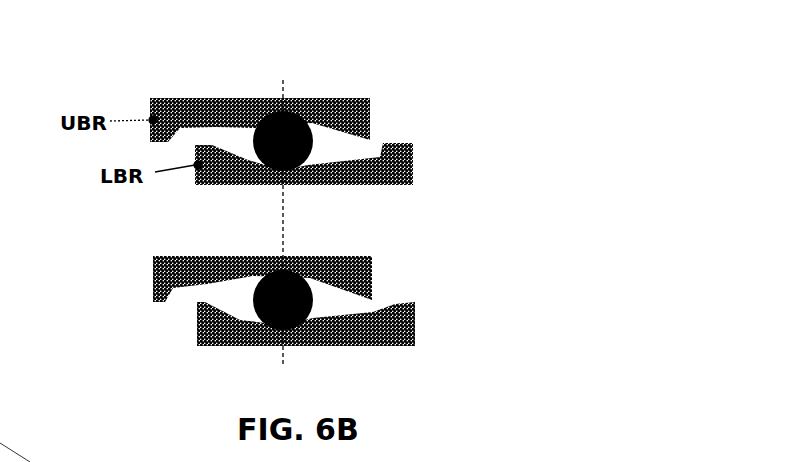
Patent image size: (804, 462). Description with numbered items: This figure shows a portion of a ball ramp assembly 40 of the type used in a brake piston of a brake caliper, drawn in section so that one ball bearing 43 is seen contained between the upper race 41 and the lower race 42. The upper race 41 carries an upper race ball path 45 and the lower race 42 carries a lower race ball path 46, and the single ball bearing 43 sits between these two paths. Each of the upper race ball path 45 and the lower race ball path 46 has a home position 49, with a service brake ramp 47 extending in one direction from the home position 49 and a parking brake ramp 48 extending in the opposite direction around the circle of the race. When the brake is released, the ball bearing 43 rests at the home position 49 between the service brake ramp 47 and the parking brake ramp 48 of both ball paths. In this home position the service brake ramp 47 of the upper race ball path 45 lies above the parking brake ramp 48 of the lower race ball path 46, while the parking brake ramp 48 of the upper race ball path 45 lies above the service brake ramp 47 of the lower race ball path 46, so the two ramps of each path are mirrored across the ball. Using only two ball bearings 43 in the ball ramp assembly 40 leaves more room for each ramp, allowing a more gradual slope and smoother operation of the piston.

The ball ramp assembly 40 is at (508, 93).
The upper race 41 is at (167, 120).
The lower race 42 is at (217, 180).
The ball bearing 43 is at (257, 128).
The upper race ball path 45 is at (335, 147).
The lower race ball path 46 is at (383, 158).
The service brake ramp 47 is at (330, 128).
The parking brake ramp 48 is at (252, 118).
The home position 49 is at (283, 220).